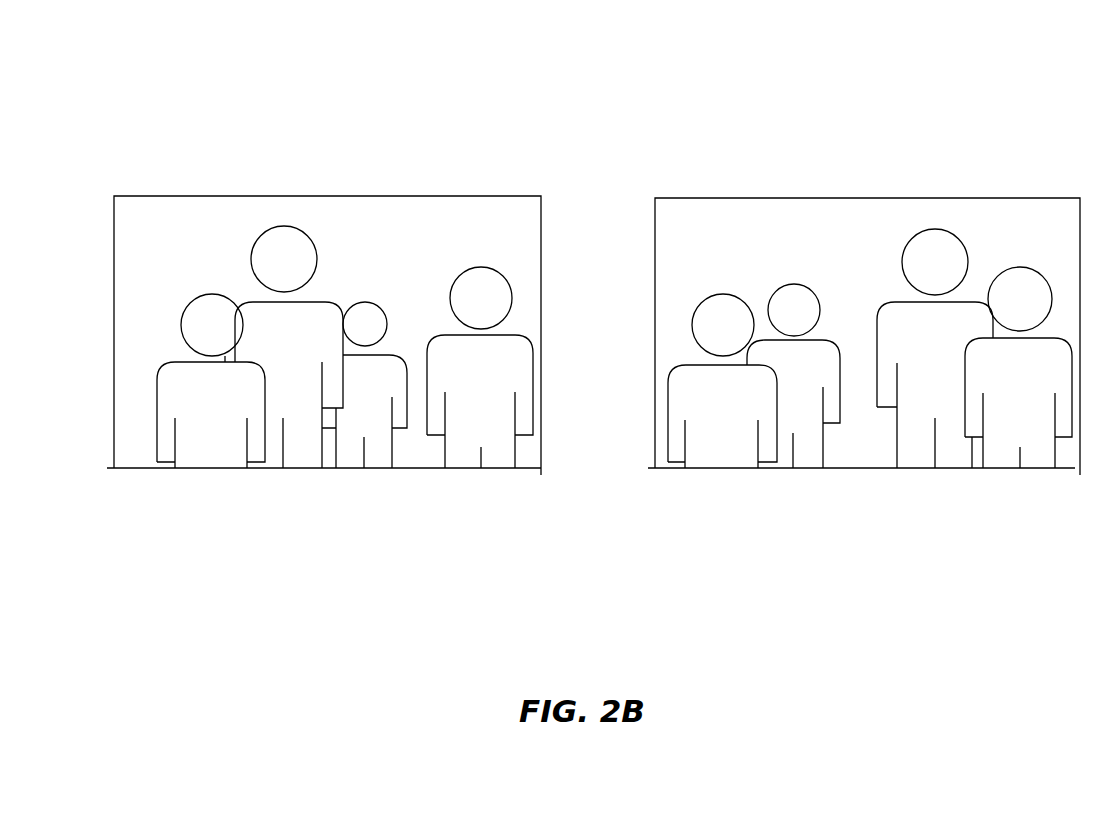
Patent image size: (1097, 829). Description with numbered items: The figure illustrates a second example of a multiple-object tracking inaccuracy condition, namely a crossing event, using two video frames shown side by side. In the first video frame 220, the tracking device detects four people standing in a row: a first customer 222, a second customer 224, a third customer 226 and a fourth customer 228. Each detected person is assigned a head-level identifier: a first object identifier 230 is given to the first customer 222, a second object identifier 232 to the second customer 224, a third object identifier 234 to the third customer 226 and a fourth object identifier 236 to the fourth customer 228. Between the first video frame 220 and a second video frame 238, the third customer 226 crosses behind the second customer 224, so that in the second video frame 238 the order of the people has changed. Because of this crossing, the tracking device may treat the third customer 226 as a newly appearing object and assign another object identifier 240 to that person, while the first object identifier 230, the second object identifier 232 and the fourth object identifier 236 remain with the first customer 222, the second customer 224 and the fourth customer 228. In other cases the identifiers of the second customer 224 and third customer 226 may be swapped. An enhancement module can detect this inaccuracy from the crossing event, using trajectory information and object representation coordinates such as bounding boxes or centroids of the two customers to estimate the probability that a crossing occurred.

The first video frame 220 is at (146, 136).
The second video frame 238 is at (717, 155).
The first customer 222 is at (447, 424).
The second customer 224 is at (606, 369).
The third customer 226 is at (582, 407).
The fourth customer 228 is at (748, 392).
The first object identifier 230 is at (447, 288).
The second object identifier 232 is at (612, 213).
The third object identifier 234 is at (360, 310).
The fourth object identifier 236 is at (750, 266).
The another object identifier 240 is at (809, 267).